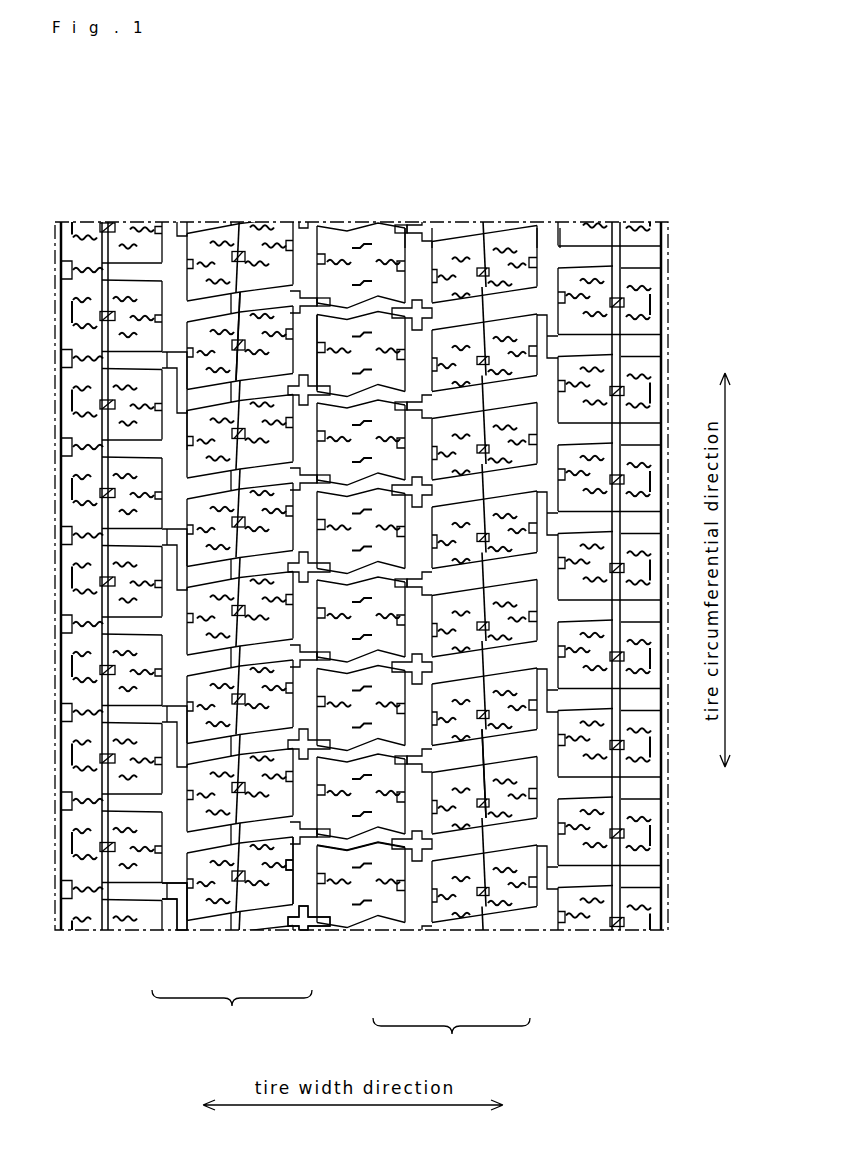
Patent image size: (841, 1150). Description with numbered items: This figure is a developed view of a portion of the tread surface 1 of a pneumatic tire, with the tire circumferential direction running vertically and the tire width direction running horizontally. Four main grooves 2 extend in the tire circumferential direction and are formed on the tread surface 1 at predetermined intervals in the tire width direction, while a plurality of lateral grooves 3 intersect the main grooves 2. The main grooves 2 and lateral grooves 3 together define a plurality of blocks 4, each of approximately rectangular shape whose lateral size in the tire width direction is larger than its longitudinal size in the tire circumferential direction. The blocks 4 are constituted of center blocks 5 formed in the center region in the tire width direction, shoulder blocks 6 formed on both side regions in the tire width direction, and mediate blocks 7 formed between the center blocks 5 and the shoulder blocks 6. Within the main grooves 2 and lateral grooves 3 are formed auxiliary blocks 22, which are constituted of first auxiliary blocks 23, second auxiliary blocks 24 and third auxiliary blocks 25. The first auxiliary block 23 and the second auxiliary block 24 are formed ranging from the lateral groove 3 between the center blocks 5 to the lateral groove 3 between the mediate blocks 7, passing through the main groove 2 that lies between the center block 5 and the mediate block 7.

The tread surface 1 is at (463, 203).
The main groove 2 is at (417, 243).
The lateral groove 3 is at (218, 300).
The block 4 is at (451, 1038).
The center block 5 is at (381, 900).
The shoulder block 6 is at (121, 378).
The mediate block 7 is at (259, 320).
The auxiliary block 22 is at (232, 1012).
The first auxiliary block 23 is at (270, 900).
The second auxiliary block 24 is at (320, 900).
The third auxiliary block 25 is at (177, 900).